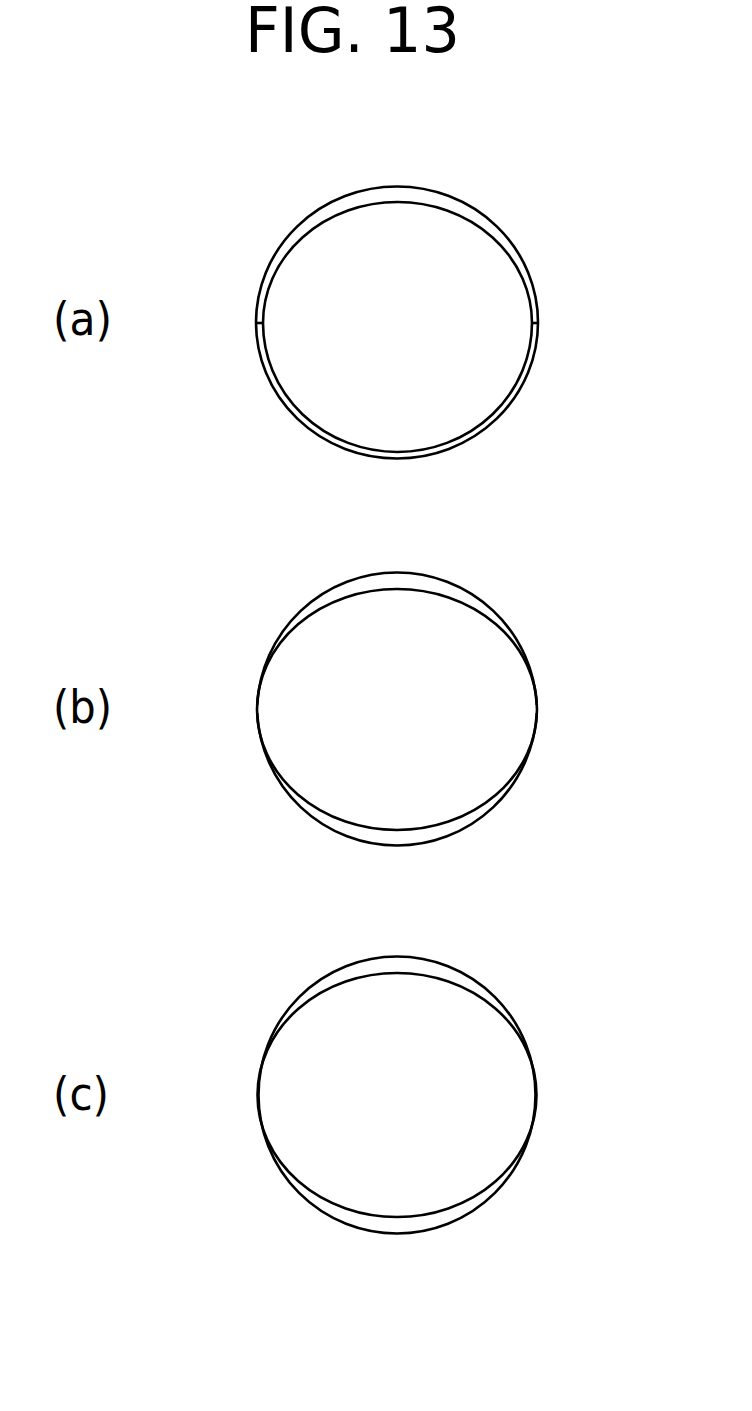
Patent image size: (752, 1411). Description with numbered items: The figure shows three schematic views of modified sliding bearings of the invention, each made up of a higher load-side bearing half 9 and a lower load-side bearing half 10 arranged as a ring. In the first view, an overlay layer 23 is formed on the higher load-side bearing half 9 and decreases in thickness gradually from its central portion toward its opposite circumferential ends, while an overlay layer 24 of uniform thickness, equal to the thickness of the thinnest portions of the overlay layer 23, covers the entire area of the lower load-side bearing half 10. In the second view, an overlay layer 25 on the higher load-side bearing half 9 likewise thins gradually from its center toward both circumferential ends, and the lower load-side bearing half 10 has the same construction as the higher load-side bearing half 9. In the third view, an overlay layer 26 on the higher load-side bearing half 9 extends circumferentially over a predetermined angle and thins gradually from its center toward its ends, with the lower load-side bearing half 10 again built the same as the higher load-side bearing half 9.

The higher load-side bearing half 9 is at (553, 292).
The lower load-side bearing half 10 is at (555, 357).
The overlay layer 23 is at (397, 202).
The overlay layer 24 is at (397, 452).
The overlay layer 25 is at (397, 589).
The overlay layer 26 is at (397, 973).